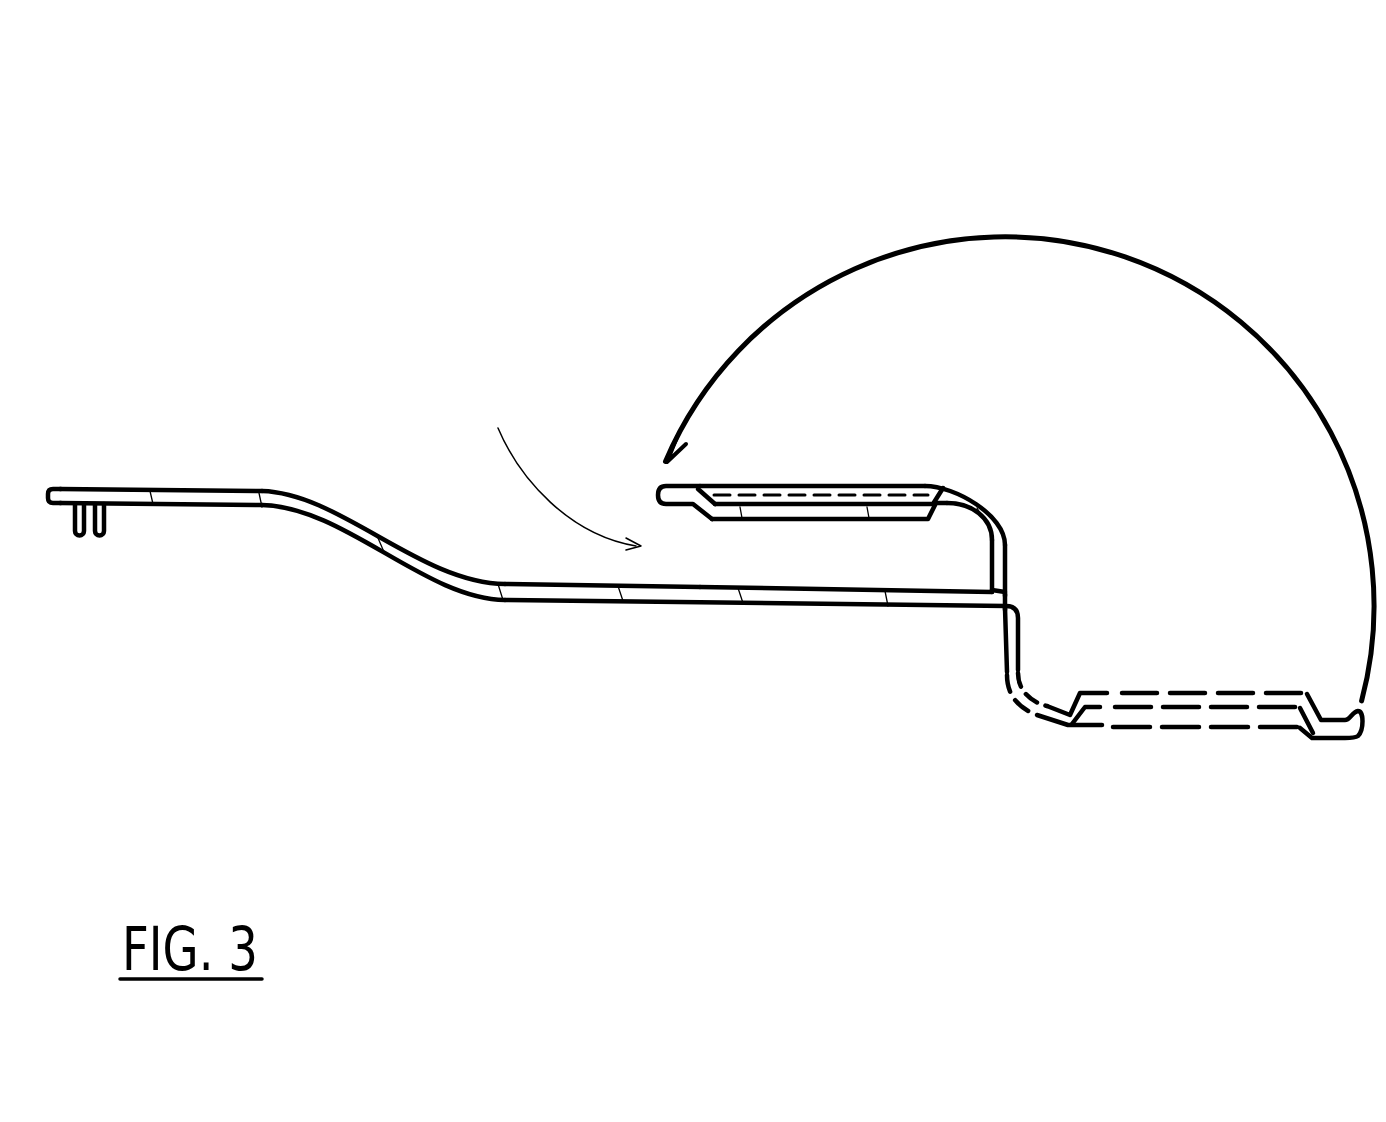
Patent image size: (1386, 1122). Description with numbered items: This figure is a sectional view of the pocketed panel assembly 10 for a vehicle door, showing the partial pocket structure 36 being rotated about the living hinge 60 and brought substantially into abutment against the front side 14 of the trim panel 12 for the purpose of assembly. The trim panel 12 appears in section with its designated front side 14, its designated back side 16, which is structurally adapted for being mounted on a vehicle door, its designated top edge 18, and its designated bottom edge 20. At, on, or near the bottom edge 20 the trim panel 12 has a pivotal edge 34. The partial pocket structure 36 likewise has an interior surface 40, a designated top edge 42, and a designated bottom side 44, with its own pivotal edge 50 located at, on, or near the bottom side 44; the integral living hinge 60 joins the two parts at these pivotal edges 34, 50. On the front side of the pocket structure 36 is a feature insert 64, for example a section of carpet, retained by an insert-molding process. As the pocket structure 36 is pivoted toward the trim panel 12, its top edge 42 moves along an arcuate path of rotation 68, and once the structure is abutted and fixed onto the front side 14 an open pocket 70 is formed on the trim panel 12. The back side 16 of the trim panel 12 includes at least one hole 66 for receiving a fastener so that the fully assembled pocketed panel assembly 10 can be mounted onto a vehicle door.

The pocketed panel assembly 10 is at (155, 157).
The trim panel 12 is at (200, 479).
The front side 14 is at (444, 567).
The back side 16 is at (550, 607).
The top edge 18 is at (52, 494).
The bottom edge 20 is at (990, 616).
The pivotal edge 34 is at (978, 588).
The partial pocket structure 36 is at (998, 490).
The interior surface 40 is at (816, 527).
The top edge 42 is at (655, 486).
The bottom side 44 is at (1010, 548).
The pivotal edge 50 is at (1008, 596).
The living hinge 60 is at (1012, 610).
The feature insert 64 is at (812, 485).
The hole 66 is at (88, 547).
The arcuate path of rotation 68 is at (1167, 270).
The open pocket 70 is at (563, 472).